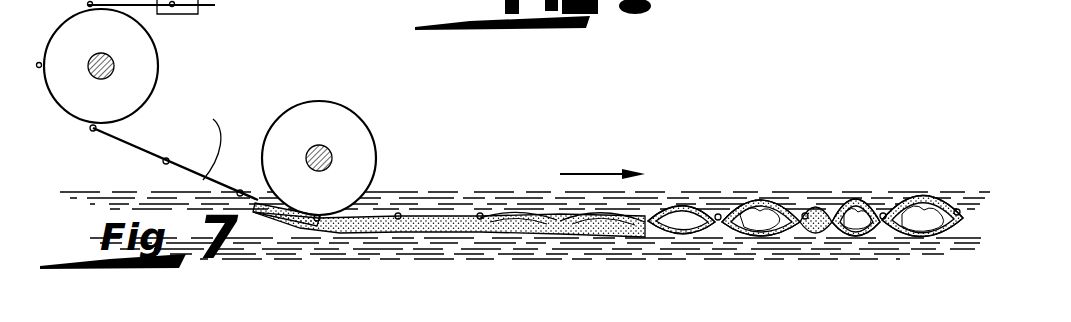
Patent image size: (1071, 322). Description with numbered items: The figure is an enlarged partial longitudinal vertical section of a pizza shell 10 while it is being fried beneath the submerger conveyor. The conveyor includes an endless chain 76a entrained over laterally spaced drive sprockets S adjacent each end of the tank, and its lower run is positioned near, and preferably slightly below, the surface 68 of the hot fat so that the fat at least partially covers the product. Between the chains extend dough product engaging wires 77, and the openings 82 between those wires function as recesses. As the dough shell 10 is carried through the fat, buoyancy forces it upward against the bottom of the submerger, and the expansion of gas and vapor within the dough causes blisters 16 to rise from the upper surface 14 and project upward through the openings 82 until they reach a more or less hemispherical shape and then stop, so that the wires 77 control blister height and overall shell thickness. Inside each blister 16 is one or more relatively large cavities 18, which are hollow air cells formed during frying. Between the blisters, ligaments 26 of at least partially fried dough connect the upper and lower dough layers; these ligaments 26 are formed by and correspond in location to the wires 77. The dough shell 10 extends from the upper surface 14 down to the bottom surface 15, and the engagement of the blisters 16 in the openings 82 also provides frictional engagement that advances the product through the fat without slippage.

The drive sprockets S is at (147, 36).
The openings 82 is at (137, 147).
The chain 76a is at (130, 143).
The wires 77 is at (163, 161).
The upper surface 14 is at (265, 205).
The bottom surface 15 is at (265, 205).
The surface of the fat 68 is at (507, 192).
The blisters 16 is at (680, 198).
The cavities 18 is at (772, 206).
The ligaments 26 is at (642, 230).
The pizza shell 10 is at (826, 152).